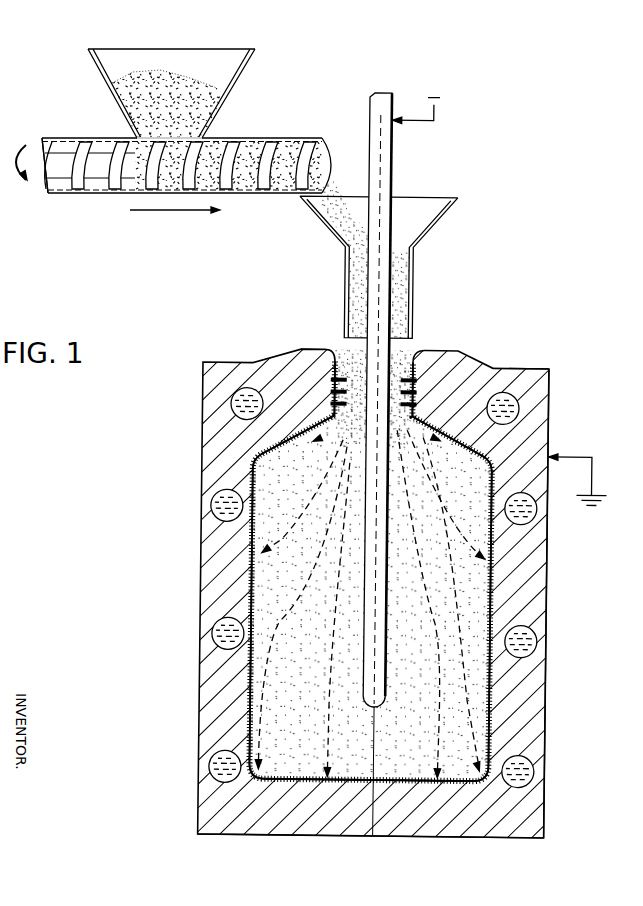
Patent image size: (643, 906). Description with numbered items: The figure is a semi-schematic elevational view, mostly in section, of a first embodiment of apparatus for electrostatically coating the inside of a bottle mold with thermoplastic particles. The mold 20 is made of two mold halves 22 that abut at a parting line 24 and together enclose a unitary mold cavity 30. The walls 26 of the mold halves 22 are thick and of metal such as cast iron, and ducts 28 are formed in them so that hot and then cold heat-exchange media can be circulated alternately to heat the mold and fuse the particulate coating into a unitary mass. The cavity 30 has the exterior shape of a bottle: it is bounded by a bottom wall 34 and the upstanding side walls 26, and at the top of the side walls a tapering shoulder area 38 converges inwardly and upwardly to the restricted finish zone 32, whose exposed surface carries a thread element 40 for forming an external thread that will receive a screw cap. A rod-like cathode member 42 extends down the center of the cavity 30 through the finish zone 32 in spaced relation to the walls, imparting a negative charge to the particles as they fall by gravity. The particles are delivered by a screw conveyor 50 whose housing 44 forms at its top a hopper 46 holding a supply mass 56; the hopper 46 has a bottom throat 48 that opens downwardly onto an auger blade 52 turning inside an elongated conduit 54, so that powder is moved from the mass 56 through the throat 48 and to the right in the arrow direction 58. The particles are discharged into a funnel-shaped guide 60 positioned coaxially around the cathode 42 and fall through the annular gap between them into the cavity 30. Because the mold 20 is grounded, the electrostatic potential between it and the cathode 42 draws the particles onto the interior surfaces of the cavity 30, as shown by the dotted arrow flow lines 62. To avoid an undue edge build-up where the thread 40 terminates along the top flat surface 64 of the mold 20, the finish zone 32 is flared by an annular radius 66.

The mold 20 is at (302, 841).
The mold halves 22 is at (551, 620).
The parting line 24 is at (372, 731).
The walls 26 is at (535, 570).
The ducts 28 is at (516, 412).
The mold cavity 30 is at (276, 655).
The finish zone 32 is at (418, 350).
The bottom wall 34 is at (398, 768).
The shoulder area 38 is at (470, 456).
The thread element 40 is at (350, 358).
The cathode member 42 is at (389, 158).
The housing 44 is at (219, 112).
The hopper 46 is at (250, 58).
The bottom throat 48 is at (171, 133).
The screw conveyor 50 is at (81, 217).
The auger blade 52 is at (60, 184).
The conduit 54 is at (258, 195).
The supply mass 56 is at (178, 62).
The arrow direction 58 is at (176, 212).
The funnel-shaped guide 60 is at (438, 217).
The flow lines 62 is at (462, 524).
The top flat surface 64 is at (536, 368).
The annular radius 66 is at (311, 349).